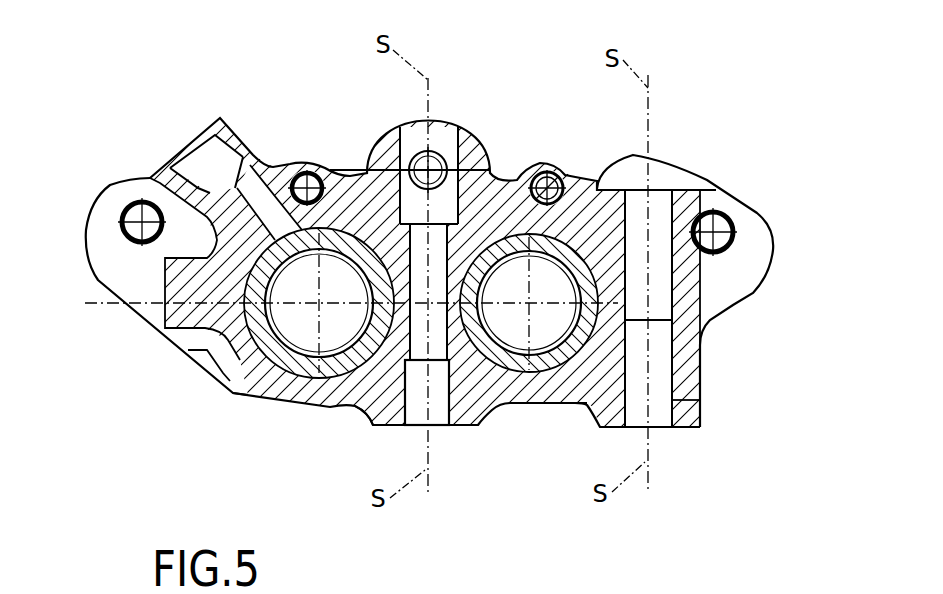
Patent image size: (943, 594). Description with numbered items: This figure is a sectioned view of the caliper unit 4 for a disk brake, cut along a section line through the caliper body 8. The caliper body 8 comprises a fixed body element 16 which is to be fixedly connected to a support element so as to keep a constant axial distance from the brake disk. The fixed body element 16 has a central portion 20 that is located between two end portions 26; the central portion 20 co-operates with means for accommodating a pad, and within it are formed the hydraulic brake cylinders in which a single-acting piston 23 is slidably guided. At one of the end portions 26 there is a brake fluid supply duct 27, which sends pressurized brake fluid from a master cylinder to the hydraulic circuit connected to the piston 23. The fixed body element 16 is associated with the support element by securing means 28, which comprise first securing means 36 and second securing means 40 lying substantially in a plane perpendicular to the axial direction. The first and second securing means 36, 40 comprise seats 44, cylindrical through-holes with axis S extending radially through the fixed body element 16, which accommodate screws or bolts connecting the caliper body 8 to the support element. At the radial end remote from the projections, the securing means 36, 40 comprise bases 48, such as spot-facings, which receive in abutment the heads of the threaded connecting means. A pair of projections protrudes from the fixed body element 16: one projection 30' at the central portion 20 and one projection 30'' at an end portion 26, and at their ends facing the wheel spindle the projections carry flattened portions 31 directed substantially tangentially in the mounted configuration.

The caliper unit 4 is at (760, 93).
The caliper body 8 is at (110, 186).
The fixed body element 16 is at (322, 408).
The central portion 20 is at (307, 407).
The piston 23 is at (233, 396).
The end portions 26 is at (150, 288).
The brake fluid supply duct 27 is at (195, 148).
The securing means 28 is at (613, 440).
The projection 30' is at (344, 475).
The projection 30'' is at (731, 436).
The flattened portions 31 is at (388, 433).
The first securing means 36 is at (699, 432).
The second securing means 40 is at (397, 411).
The seats 44 is at (370, 165).
The bases 48 is at (447, 219).